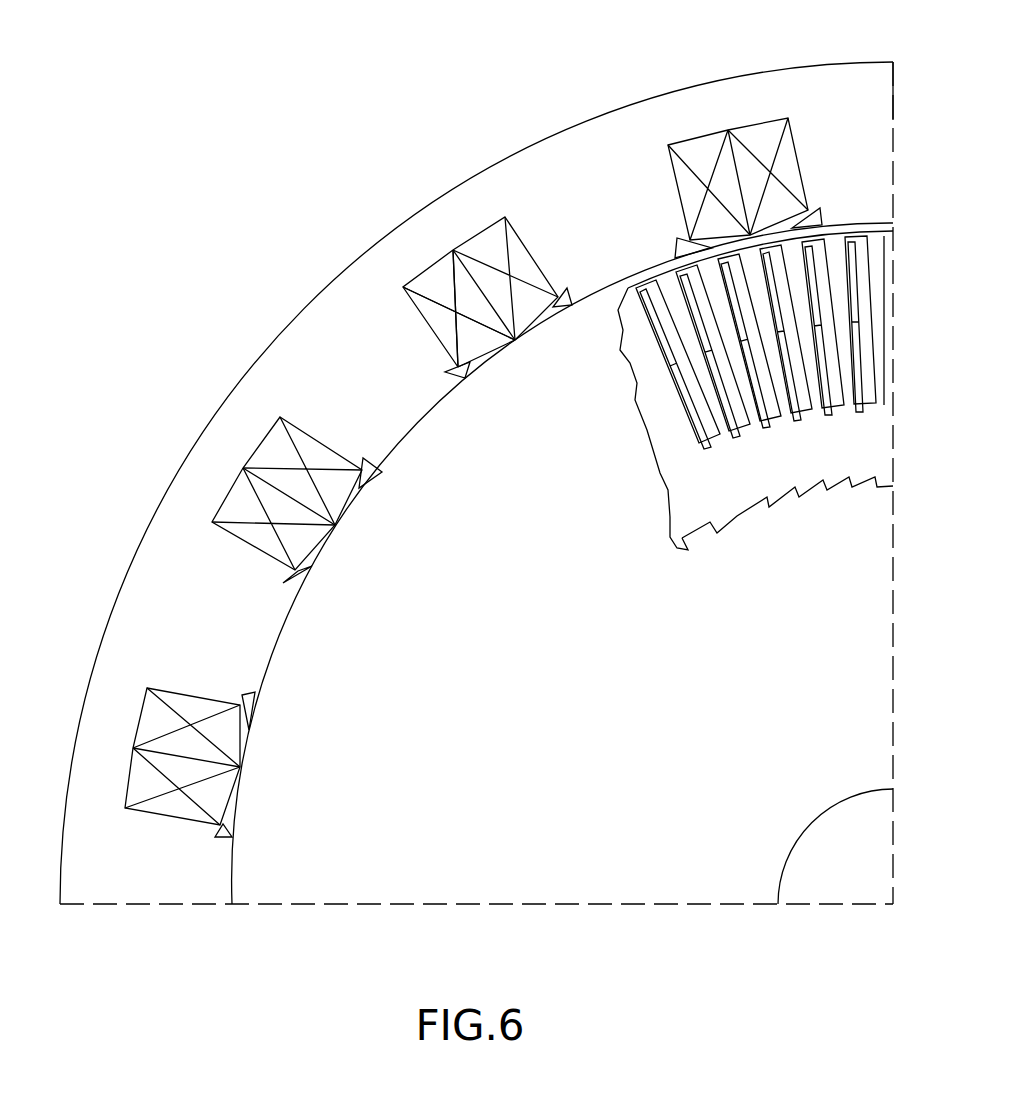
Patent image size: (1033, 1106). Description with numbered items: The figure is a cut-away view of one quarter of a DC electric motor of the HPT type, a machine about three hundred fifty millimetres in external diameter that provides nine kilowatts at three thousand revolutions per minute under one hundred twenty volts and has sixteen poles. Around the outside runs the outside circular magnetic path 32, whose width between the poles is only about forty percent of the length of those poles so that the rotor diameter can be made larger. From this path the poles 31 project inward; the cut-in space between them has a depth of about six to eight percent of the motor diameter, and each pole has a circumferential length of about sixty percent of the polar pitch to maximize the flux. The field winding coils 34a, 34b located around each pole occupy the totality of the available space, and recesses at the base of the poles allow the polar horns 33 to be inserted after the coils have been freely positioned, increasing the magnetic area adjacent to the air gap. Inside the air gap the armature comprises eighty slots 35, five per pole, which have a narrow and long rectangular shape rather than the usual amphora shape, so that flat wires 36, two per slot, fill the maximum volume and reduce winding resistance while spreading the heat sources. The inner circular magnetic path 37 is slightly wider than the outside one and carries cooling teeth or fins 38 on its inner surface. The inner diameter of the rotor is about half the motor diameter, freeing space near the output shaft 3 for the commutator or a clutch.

The output shaft 3 is at (815, 868).
The poles 31 is at (599, 229).
The outside circular magnetic path 32 is at (724, 112).
The polar horns 33 is at (565, 308).
The field winding coil 34a is at (517, 257).
The field winding coil 34b is at (699, 155).
The slots 35 is at (660, 425).
The wires 36 is at (814, 285).
The inner circular magnetic path 37 is at (751, 479).
The cooling teeth or fins 38 is at (733, 522).